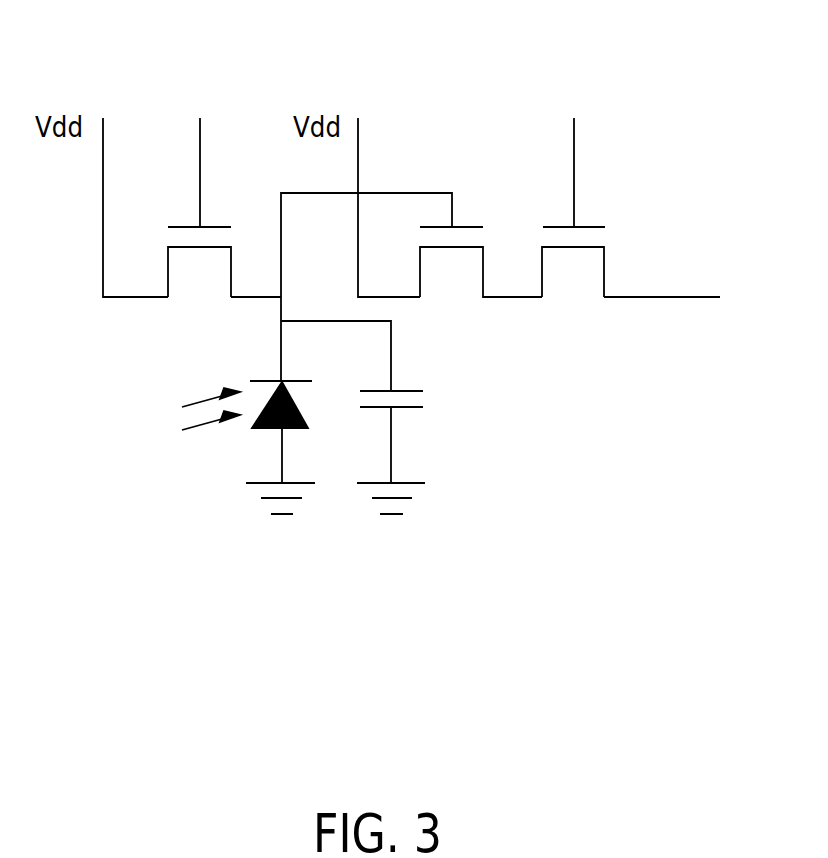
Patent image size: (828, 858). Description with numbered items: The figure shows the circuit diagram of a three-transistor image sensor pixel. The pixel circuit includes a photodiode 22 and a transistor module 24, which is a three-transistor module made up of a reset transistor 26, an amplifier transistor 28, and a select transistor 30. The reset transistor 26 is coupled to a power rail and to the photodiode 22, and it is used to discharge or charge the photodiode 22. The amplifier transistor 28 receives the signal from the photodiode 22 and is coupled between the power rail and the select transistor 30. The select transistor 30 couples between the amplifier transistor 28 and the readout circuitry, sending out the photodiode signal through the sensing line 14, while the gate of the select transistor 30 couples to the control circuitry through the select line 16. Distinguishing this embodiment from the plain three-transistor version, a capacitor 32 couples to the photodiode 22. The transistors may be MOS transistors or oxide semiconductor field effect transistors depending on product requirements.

The sensing line 14 is at (678, 299).
The select line 16 is at (575, 143).
The photodiode 22 is at (223, 442).
The transistor module 24 is at (367, 90).
The reset transistor 26 is at (202, 283).
The amplifier transistor 28 is at (452, 283).
The select transistor 30 is at (575, 283).
The capacitor 32 is at (440, 398).